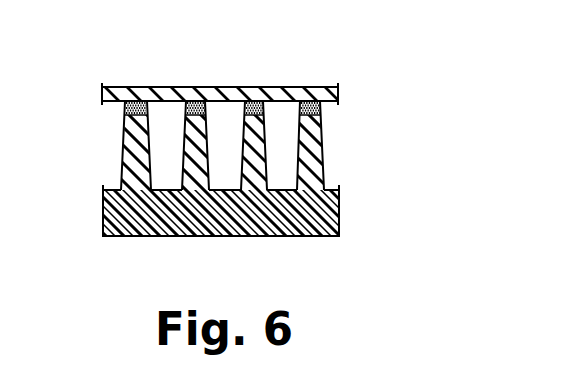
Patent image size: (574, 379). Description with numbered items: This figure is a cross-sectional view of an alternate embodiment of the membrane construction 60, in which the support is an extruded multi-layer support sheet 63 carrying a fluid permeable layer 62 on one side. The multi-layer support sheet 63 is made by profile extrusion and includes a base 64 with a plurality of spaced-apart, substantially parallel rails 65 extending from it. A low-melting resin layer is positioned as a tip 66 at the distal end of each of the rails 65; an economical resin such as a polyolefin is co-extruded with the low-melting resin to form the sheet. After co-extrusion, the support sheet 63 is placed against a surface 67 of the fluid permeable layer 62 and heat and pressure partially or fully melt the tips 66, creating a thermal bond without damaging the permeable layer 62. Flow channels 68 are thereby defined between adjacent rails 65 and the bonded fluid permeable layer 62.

The membrane construction 60 is at (366, 46).
The fluid permeable layer 62 is at (99, 72).
The multi-layer support sheet 63 is at (358, 210).
The base 64 is at (145, 237).
The rails 65 is at (124, 152).
The tip 66 is at (262, 108).
The surface 67 is at (237, 97).
The flow channels 68 is at (160, 110).